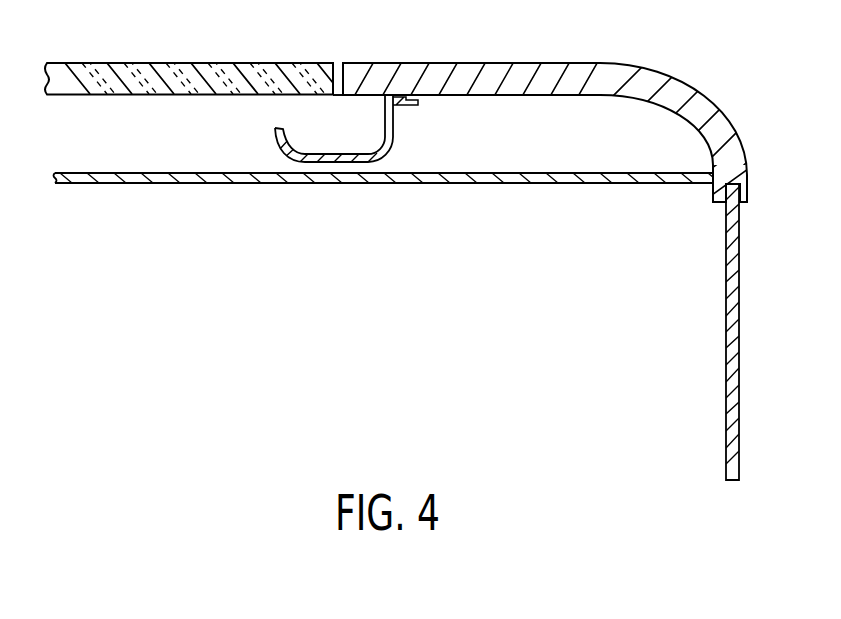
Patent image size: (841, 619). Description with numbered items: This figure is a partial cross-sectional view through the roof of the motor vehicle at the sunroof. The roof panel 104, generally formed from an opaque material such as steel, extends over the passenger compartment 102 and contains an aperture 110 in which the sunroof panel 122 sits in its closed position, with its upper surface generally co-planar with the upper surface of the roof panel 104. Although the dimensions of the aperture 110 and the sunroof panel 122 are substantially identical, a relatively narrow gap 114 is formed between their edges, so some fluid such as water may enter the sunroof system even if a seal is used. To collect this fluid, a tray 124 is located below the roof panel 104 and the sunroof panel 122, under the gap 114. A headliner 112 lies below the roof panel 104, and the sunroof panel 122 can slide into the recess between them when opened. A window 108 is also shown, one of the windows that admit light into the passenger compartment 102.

The passenger compartment 102 is at (378, 318).
The roof panel 104 is at (523, 62).
The window 108 is at (725, 325).
The aperture 110 is at (341, 67).
The headliner 112 is at (420, 183).
The gap 114 is at (343, 95).
The sunroof panel 122 is at (140, 63).
The tray 124 is at (347, 153).